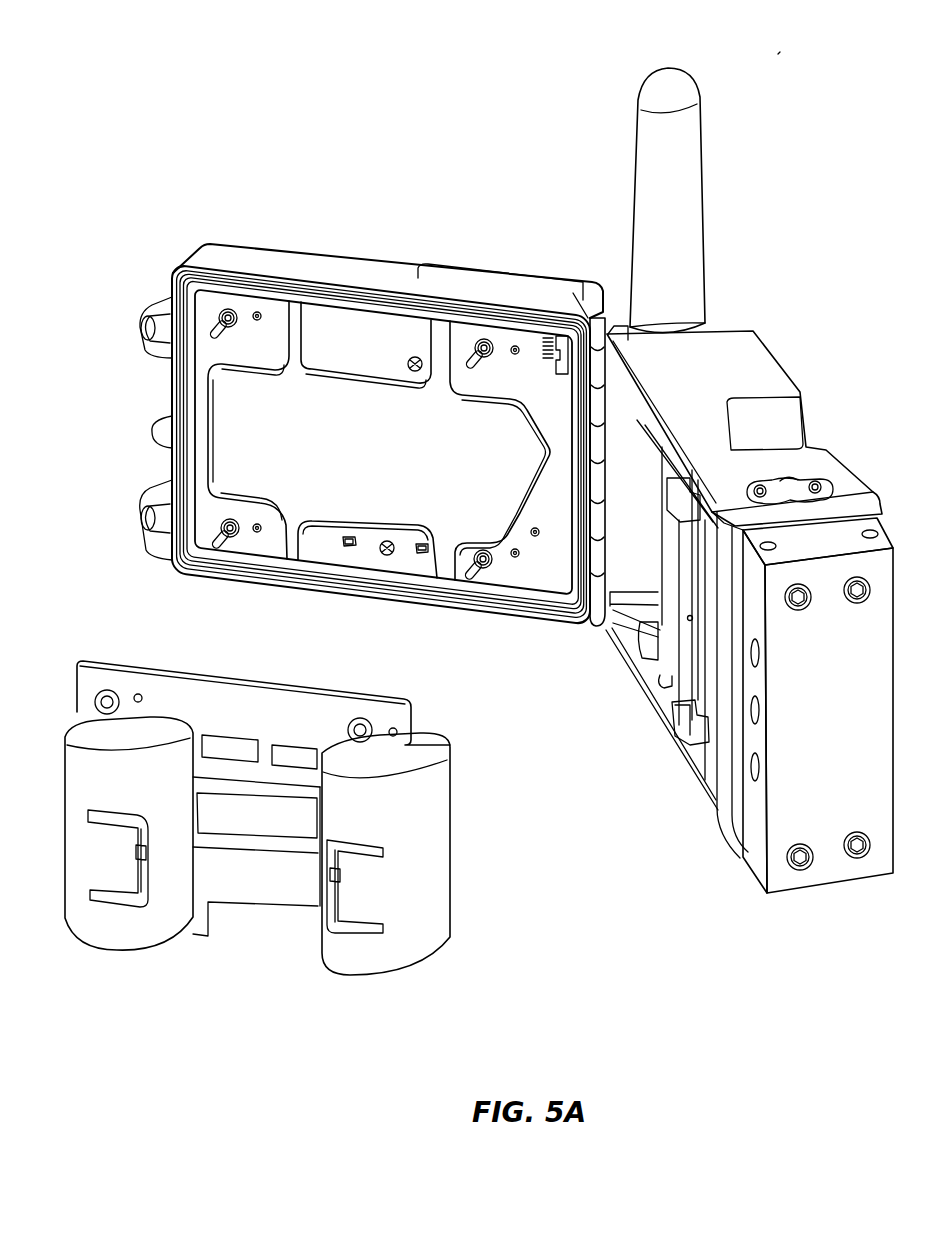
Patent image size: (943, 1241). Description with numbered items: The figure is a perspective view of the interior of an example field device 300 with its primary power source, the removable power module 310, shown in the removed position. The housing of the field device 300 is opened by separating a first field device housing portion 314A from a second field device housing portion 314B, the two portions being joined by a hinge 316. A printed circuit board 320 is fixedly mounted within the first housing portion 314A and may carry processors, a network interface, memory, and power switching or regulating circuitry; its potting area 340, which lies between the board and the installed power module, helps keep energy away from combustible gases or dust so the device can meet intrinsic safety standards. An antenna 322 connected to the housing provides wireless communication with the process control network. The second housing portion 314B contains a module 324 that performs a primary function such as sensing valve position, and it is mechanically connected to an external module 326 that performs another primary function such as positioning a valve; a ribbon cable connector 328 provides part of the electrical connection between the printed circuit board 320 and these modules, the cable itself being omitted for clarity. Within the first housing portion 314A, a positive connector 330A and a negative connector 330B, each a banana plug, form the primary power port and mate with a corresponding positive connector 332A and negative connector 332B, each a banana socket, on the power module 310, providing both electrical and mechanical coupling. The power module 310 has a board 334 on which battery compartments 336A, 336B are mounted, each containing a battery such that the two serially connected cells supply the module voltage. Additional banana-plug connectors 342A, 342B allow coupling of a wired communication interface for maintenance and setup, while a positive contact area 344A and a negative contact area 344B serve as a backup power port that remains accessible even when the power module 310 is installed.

The field device 300 is at (781, 50).
The power module 310 is at (250, 932).
The first field device housing portion 314A is at (258, 243).
The second field device housing portion 314B is at (776, 360).
The hinge 316 is at (597, 594).
The printed circuit board 320 is at (363, 342).
The antenna 322 is at (704, 149).
The module 324 is at (683, 658).
The external module 326 is at (829, 880).
The ribbon cable connector 328 is at (563, 345).
The positive connector 330A is at (224, 338).
The negative connector 330B is at (498, 350).
The positive connector 332A is at (107, 690).
The negative connector 332B is at (361, 718).
The board 334 is at (173, 670).
The battery compartment 336A is at (117, 948).
The battery compartment 336B is at (385, 980).
The potting area 340 is at (400, 462).
The connector 342A is at (238, 534).
The connector 342B is at (486, 570).
The positive contact area 344A is at (345, 553).
The negative contact area 344B is at (421, 558).